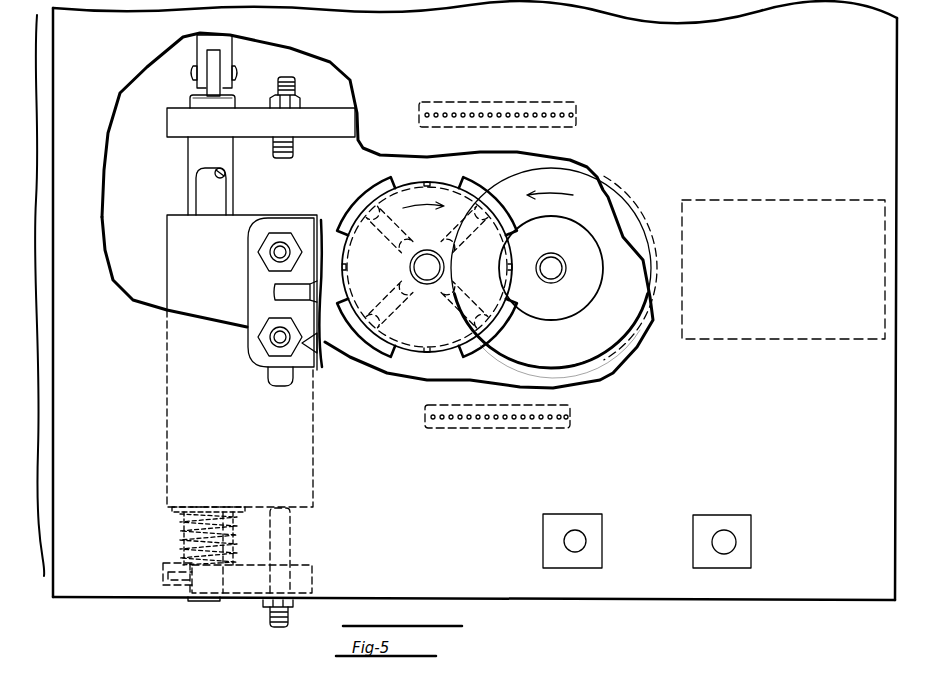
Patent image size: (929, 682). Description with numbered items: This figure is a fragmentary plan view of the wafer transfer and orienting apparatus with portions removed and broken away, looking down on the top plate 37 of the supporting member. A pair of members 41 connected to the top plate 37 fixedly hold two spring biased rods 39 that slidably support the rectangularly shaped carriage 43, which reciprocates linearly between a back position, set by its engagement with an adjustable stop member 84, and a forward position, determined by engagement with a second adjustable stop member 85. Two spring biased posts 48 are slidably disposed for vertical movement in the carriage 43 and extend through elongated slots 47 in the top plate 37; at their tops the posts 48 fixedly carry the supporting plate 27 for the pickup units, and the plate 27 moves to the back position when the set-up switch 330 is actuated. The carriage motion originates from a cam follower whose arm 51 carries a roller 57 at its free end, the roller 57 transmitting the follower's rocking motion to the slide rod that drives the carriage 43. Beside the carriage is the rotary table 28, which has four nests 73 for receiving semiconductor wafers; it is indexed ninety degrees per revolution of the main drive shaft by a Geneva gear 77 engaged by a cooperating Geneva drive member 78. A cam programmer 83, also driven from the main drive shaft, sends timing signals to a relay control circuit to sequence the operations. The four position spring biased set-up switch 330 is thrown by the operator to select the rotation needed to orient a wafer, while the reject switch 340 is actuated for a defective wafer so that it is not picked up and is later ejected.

The top plate 37 is at (830, 607).
The member 41 is at (167, 125).
The arm 51 is at (225, 43).
The roller 57 is at (203, 91).
The adjustable stop member 84 is at (276, 90).
The spring biased rod 39 is at (193, 193).
The carriage 43 is at (167, 287).
The supporting plate 27 is at (304, 372).
The spring biased post 48 is at (267, 250).
The elongated slot 47 is at (273, 384).
The adjustable stop member 85 is at (290, 532).
The rotary table 28 is at (452, 182).
The nest 73 is at (427, 181).
The Geneva gear 77 is at (477, 202).
The Geneva drive member 78 is at (597, 363).
The cam programmer 83 is at (806, 200).
The set-up switch 330 is at (602, 514).
The reject switch 340 is at (751, 515).